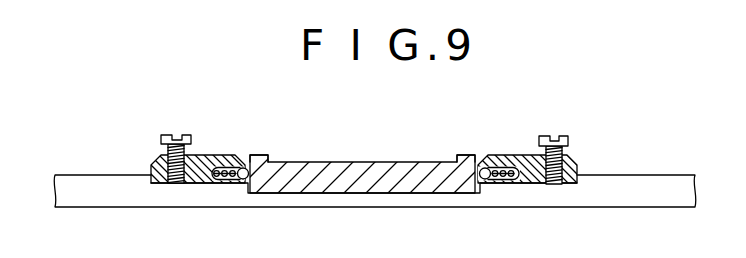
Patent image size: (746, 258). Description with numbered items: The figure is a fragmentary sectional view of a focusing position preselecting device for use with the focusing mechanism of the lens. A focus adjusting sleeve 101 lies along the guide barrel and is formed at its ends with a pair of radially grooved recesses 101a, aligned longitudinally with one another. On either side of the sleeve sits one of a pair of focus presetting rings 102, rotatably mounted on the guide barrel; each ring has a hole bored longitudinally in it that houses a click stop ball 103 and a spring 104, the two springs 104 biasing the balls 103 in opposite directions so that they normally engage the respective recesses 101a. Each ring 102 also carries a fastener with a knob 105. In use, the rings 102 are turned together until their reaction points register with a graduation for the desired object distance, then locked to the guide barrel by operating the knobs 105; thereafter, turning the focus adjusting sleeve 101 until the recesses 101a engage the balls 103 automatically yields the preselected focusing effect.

The focus adjusting sleeve 101 is at (357, 162).
The radially grooved recesses 101a is at (478, 161).
The focus presetting rings 102 is at (521, 162).
The click stop balls 103 is at (496, 181).
The springs 104 is at (509, 182).
The knobs 105 is at (564, 137).